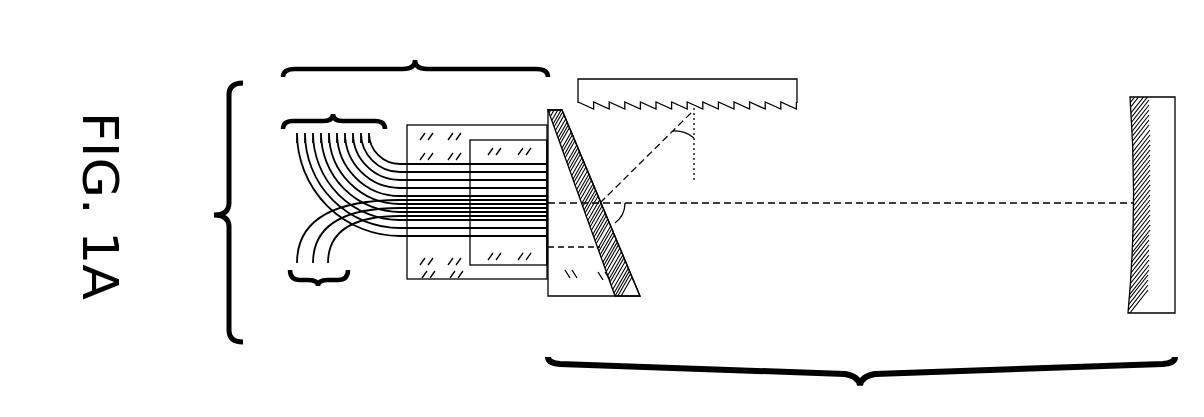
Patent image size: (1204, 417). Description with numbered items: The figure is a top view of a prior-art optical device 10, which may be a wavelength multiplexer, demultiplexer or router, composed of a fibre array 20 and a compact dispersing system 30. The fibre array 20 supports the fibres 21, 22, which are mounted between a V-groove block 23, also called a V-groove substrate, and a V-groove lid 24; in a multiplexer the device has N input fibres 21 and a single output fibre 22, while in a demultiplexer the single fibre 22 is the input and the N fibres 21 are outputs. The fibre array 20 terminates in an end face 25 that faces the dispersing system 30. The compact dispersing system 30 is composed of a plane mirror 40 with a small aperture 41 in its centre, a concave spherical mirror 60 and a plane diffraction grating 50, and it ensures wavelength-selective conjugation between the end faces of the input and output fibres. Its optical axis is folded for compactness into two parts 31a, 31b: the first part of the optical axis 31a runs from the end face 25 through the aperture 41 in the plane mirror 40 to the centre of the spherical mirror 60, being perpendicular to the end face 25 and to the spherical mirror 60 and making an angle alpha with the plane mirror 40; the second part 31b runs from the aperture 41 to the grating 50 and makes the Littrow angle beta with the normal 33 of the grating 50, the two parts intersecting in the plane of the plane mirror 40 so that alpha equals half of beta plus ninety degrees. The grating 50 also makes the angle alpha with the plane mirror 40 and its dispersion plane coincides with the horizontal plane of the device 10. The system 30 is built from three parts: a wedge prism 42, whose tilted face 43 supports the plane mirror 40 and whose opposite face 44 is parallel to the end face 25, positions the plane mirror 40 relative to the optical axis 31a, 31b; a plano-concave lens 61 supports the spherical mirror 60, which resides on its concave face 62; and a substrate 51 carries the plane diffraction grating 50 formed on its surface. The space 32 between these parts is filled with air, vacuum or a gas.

The optical device 10 is at (209, 212).
The fibre array 20 is at (415, 51).
The N input fibres / output fibres 21 is at (415, 159).
The output fibre / input fibre 22 is at (418, 262).
The V-groove block 23 is at (432, 270).
The V-groove lid 24 is at (512, 252).
The end face 25 is at (548, 148).
The compact dispersing system 30 is at (861, 387).
The first part of the optical axis 31a is at (958, 205).
The second part of the optical axis 31b is at (648, 160).
The space 32 is at (990, 140).
The normal of the grating 33 is at (697, 168).
The plane mirror 40 is at (635, 288).
The small aperture 41 is at (600, 178).
The wedge prism 42 is at (560, 108).
The tilted face 43 is at (630, 298).
The opposite face 44 is at (538, 297).
The plane diffraction grating 50 is at (640, 98).
The substrate 51 is at (780, 93).
The concave spherical mirror 60 is at (1135, 253).
The plano-concave lens 61 is at (1158, 115).
The concave face 62 is at (1136, 290).